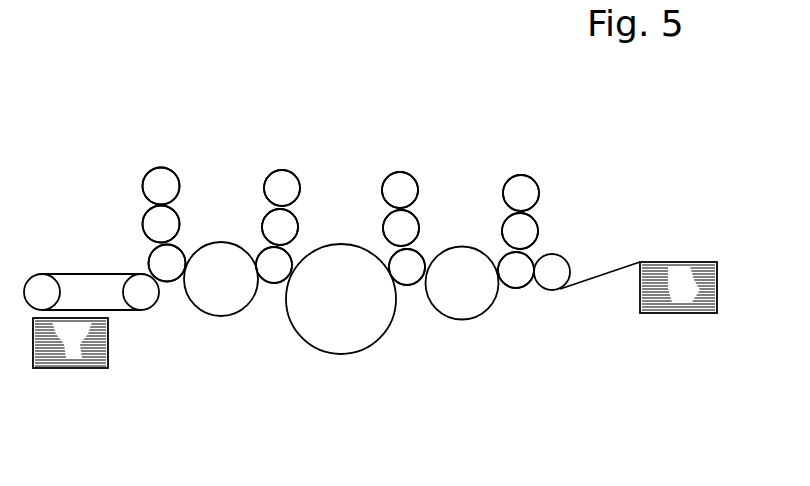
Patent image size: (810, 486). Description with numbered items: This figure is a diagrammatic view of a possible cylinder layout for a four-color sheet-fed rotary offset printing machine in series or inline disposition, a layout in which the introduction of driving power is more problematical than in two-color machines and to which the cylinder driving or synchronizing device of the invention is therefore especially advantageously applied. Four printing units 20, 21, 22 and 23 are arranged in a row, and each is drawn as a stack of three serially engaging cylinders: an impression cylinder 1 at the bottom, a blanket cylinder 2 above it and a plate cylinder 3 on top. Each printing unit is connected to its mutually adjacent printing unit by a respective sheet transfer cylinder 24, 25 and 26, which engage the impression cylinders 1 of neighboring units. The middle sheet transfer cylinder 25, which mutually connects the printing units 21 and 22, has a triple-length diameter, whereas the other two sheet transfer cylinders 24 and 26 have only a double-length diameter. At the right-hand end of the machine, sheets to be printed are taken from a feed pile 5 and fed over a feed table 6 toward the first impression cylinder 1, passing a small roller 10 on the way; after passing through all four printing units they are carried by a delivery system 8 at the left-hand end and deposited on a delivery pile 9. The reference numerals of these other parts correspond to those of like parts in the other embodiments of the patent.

The impression cylinder 1 is at (168, 273).
The blanket cylinder 2 is at (165, 222).
The plate cylinder 3 is at (163, 183).
The feed pile 5 is at (677, 280).
The feed table 6 is at (607, 270).
The delivery system 8 is at (82, 282).
The delivery pile 9 is at (72, 348).
The guide roller 10 is at (557, 265).
The printing unit 20 is at (524, 167).
The printing unit 21 is at (405, 158).
The printing unit 22 is at (285, 157).
The printing unit 23 is at (163, 157).
The sheet transfer cylinder 24 is at (467, 309).
The sheet transfer cylinder 25 is at (342, 338).
The sheet transfer cylinder 26 is at (223, 305).